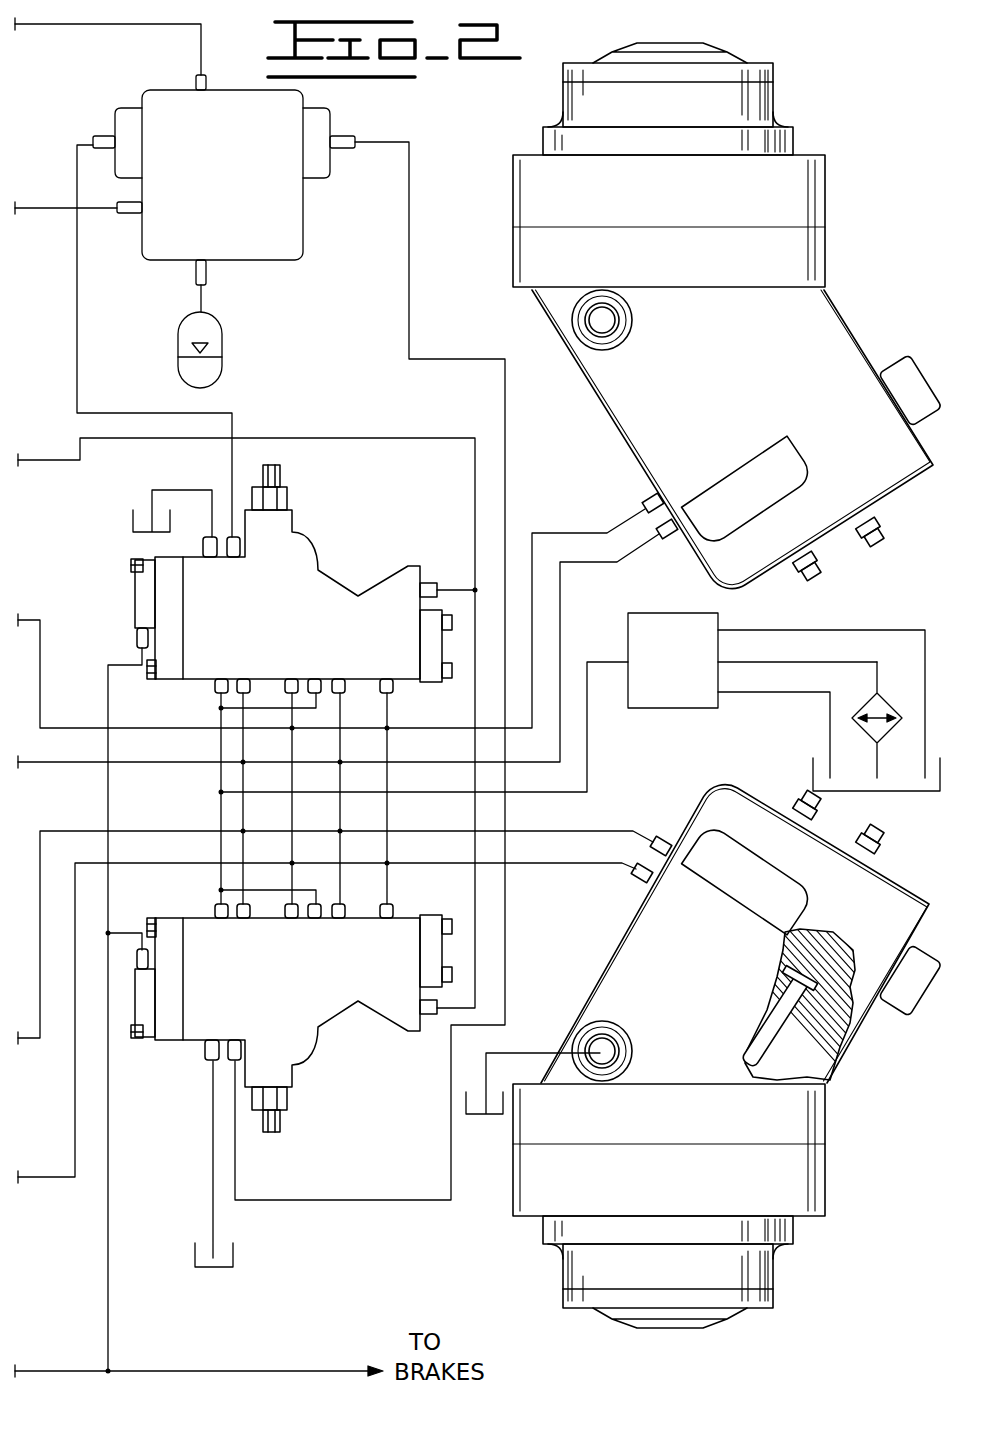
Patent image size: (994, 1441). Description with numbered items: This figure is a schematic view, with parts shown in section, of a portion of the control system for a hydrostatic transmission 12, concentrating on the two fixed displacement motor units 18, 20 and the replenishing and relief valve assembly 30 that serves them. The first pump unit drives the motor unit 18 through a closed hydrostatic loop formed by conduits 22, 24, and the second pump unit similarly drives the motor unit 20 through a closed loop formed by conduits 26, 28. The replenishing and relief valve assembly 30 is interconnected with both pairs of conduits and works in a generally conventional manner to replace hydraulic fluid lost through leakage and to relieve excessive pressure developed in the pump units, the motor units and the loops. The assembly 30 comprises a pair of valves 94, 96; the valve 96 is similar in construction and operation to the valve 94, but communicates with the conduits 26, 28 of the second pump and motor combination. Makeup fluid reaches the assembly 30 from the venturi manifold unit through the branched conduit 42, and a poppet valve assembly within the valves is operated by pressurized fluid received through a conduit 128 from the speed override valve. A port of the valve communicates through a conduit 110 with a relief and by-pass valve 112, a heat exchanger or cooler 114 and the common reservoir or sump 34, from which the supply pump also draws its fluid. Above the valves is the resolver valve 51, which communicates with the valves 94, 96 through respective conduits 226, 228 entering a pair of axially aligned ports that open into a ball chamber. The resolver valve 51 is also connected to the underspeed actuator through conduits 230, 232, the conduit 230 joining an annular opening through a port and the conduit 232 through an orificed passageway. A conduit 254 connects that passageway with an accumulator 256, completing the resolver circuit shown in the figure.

The hydrostatic transmission 12 is at (400, 403).
The fixed displacement motor unit 18 is at (736, 379).
The fixed displacement motor unit 20 is at (712, 990).
The conduit 22 is at (130, 762).
The conduit 24 is at (117, 728).
The conduit 26 is at (122, 831).
The conduit 28 is at (147, 863).
The replenishing and relief valve assembly 30 is at (331, 500).
The reservoir or sump 34 is at (133, 532).
The branched conduit 42 is at (475, 523).
The resolver valve 51 is at (234, 165).
The valve 94 is at (300, 637).
The valve 96 is at (284, 980).
The conduit 110 is at (587, 778).
The relief and by-pass valve 112 is at (718, 622).
The heat exchanger or cooler 114 is at (860, 705).
The conduit 128 is at (108, 1200).
The conduit 226 is at (77, 178).
The conduit 228 is at (409, 168).
The conduit 230 is at (176, 23).
The conduit 232 is at (63, 212).
The conduit 254 is at (206, 273).
The accumulator 256 is at (221, 341).